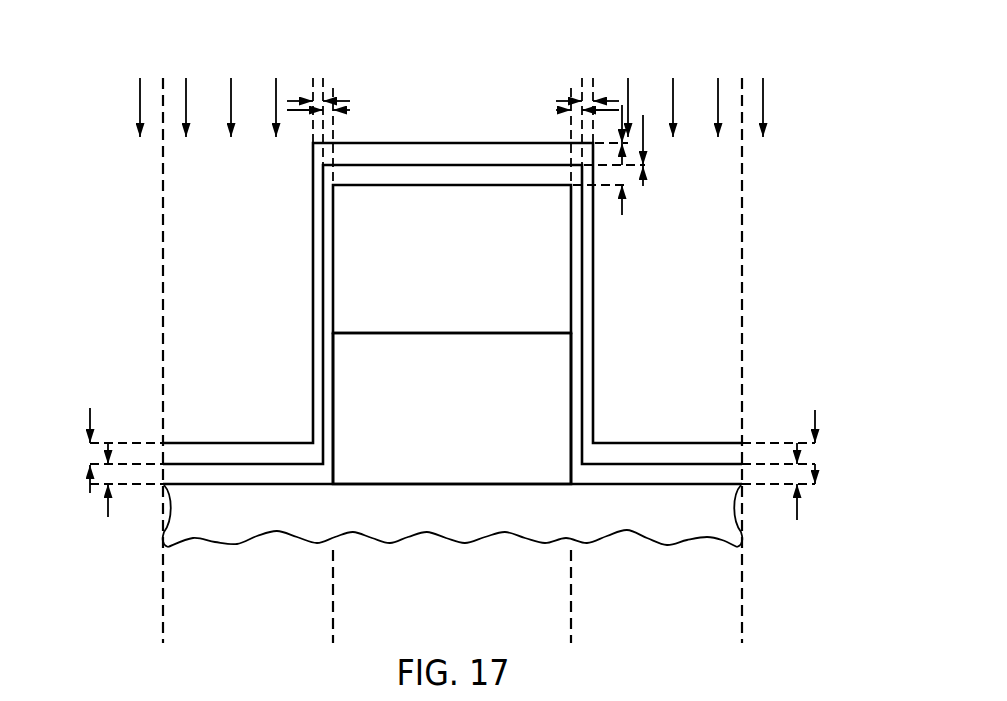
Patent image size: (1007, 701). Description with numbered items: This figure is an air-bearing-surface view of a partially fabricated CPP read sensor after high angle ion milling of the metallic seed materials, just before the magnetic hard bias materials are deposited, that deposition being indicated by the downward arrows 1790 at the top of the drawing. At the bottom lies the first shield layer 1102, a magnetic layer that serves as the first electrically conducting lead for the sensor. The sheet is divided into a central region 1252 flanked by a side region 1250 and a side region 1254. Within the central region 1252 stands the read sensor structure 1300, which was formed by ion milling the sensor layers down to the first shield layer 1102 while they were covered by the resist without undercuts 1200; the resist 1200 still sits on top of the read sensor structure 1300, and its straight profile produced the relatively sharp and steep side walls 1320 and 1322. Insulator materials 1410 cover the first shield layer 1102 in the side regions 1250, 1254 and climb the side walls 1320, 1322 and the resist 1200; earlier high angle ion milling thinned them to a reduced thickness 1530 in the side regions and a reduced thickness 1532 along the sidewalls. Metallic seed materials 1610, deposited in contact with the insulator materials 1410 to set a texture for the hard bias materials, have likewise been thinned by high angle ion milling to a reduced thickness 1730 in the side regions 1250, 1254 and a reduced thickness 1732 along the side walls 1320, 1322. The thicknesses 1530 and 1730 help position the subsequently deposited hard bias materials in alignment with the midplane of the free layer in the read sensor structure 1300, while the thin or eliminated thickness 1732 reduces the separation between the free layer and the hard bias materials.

The first shield layer 1102 is at (582, 516).
The resist without undercuts 1200 is at (515, 283).
The side region 1250 is at (248, 360).
The central region 1252 is at (469, 596).
The side region 1254 is at (669, 360).
The read sensor structure 1300 is at (541, 433).
The side wall 1320 is at (331, 413).
The side wall 1322 is at (573, 413).
The insulator materials 1410 is at (433, 181).
The reduced thickness D_IC 1530 is at (680, 178).
The reduced thickness D_ID 1532 is at (357, 82).
The metallic seed materials 1610 is at (433, 159).
The reduced thickness D_MC 1730 is at (690, 152).
The reduced thickness D_MD 1732 is at (316, 60).
The hard bias material deposition 1790 is at (772, 102).